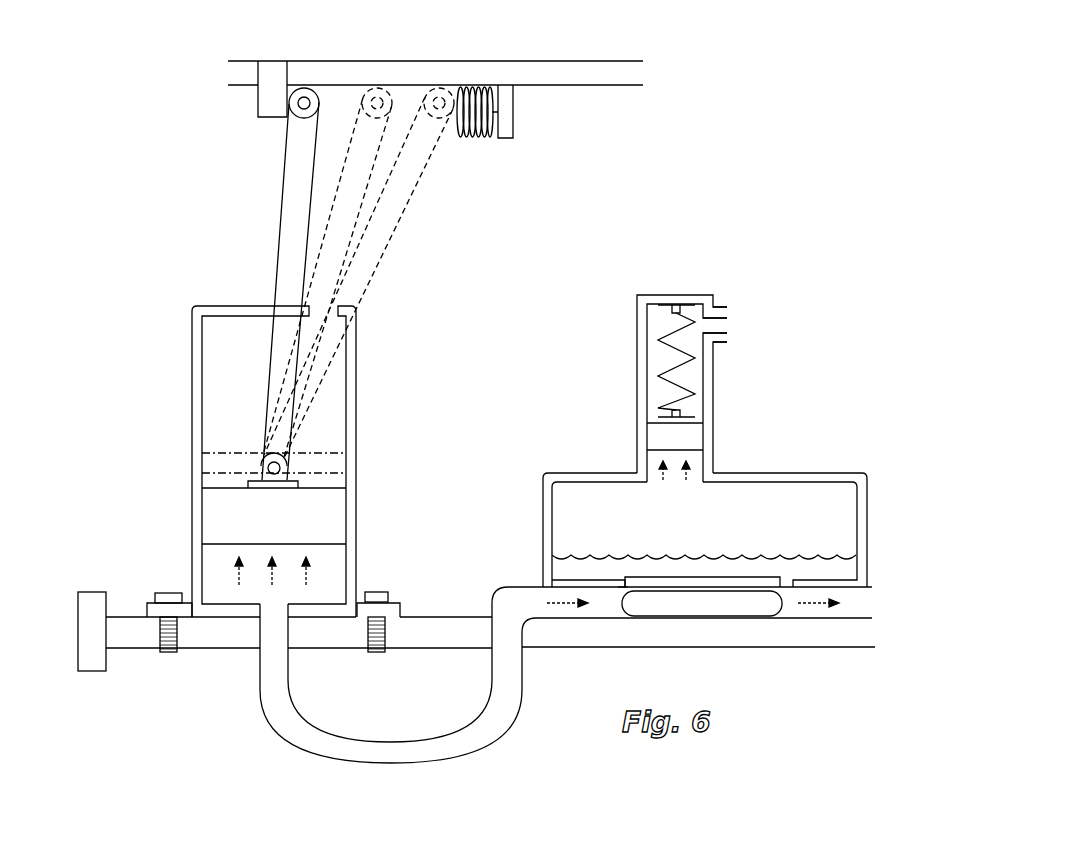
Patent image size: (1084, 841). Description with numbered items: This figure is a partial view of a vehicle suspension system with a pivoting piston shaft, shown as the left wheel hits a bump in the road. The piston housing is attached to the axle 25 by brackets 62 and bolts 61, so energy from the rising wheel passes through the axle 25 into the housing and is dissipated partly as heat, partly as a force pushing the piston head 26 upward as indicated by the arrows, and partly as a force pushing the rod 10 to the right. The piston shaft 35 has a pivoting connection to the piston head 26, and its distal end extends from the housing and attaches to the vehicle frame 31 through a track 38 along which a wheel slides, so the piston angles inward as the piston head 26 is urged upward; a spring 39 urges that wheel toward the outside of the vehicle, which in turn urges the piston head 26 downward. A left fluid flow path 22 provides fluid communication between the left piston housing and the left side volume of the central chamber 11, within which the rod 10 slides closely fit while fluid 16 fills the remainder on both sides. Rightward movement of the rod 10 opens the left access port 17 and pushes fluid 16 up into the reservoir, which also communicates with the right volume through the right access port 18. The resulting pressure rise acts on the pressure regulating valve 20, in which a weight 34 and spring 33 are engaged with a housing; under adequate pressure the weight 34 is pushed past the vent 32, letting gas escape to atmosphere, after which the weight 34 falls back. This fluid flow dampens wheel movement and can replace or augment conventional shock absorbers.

The rod 10 is at (708, 605).
The central chamber 11 is at (608, 607).
The fluid 16 is at (213, 578).
The left access port 17 is at (618, 587).
The right access port 18 is at (787, 578).
The pressure regulating valve 20 is at (713, 405).
The left fluid flow path 22 is at (312, 740).
The axle 25 is at (229, 637).
The piston head 26 is at (213, 515).
The vehicle frame 31 is at (537, 72).
The vent 32 is at (720, 328).
The spring 33 is at (662, 373).
The weight 34 is at (657, 435).
The piston shaft 35 is at (293, 208).
The track 38 is at (272, 105).
The spring 39 is at (467, 140).
The bolts 61 is at (167, 648).
The brackets 62 is at (150, 607).